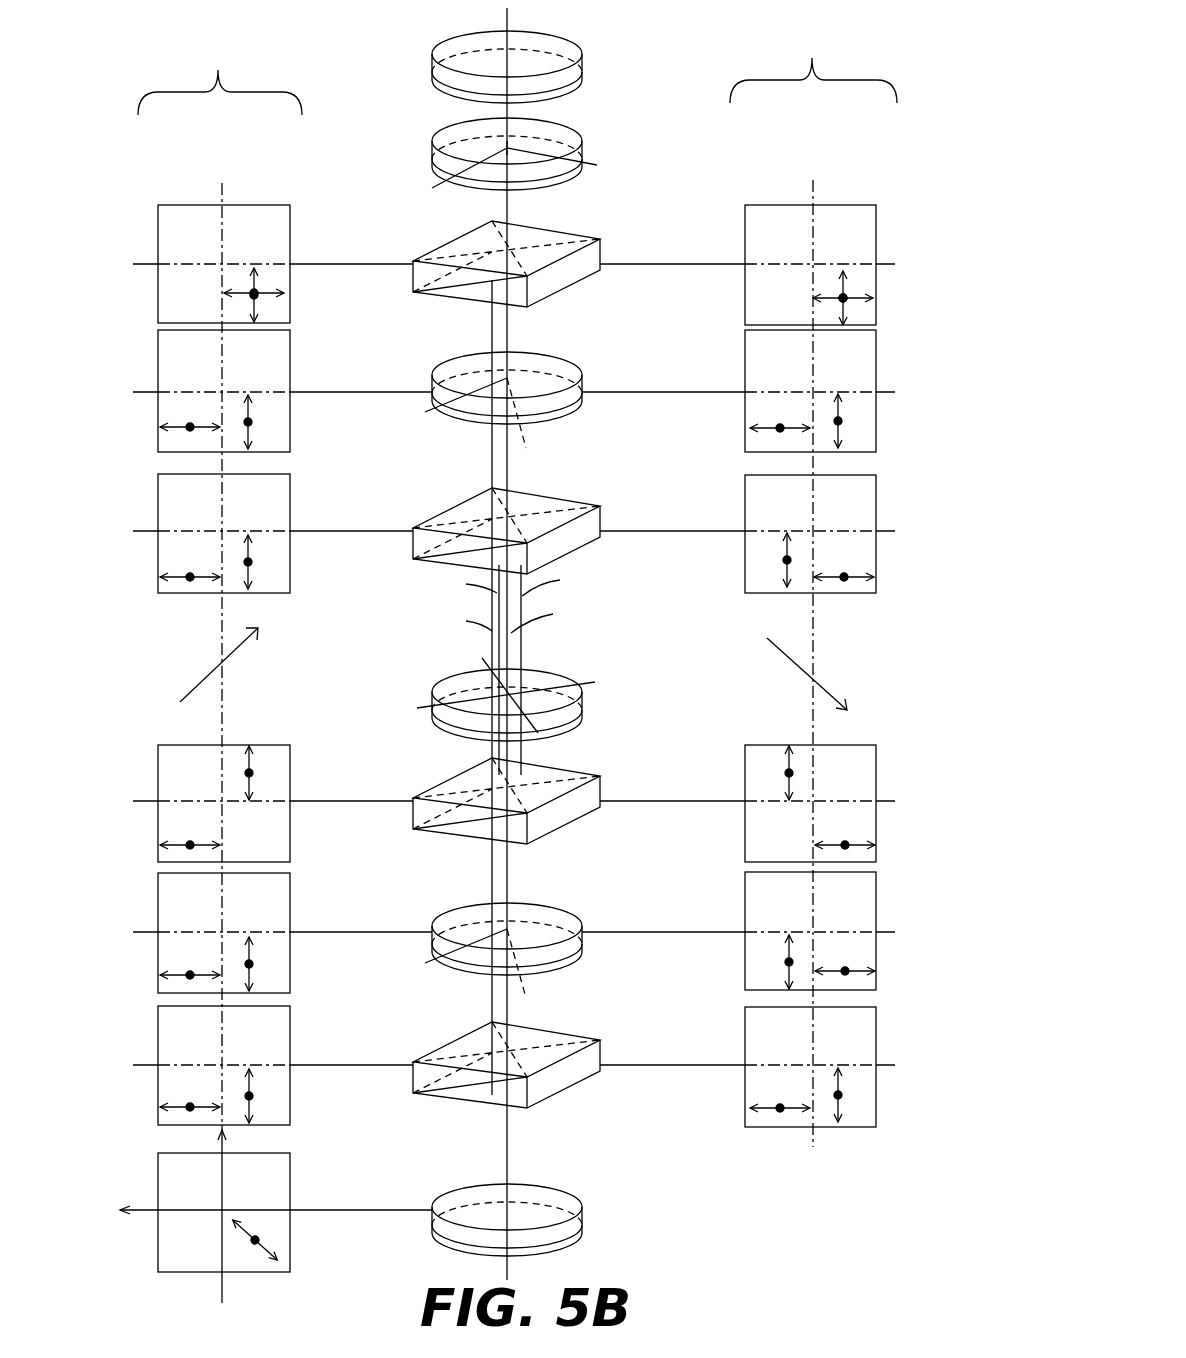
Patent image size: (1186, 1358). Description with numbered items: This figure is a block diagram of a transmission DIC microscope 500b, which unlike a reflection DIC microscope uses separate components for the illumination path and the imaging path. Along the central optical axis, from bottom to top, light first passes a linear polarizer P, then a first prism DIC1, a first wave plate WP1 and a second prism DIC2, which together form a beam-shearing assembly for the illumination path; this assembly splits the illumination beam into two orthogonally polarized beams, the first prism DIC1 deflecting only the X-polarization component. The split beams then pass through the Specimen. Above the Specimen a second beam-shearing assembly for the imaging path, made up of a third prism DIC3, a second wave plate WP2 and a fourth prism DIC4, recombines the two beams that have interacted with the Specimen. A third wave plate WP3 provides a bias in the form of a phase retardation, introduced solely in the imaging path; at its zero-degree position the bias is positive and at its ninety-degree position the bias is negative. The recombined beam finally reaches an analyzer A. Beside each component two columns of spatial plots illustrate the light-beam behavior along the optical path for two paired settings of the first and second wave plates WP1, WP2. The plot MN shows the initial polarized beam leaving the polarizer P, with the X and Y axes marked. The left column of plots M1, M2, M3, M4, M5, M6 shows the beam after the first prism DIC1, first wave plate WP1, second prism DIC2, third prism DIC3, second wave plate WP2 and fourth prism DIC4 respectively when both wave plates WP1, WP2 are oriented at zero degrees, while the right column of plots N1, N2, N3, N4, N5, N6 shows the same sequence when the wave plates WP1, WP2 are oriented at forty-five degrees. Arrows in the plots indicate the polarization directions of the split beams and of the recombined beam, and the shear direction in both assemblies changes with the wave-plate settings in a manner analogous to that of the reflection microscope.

The transmission DIC microscope 500b is at (773, 1250).
The spatial plot M1 is at (290, 1032).
The spatial plot M2 is at (290, 900).
The spatial plot M3 is at (290, 772).
The spatial plot M4 is at (290, 500).
The spatial plot M5 is at (290, 357).
The spatial plot M6 is at (290, 232).
The spatial plot MN is at (290, 1245).
The spatial plot N1 is at (876, 1033).
The spatial plot N2 is at (876, 897).
The spatial plot N3 is at (876, 770).
The spatial plot N4 is at (876, 505).
The spatial plot N5 is at (876, 365).
The spatial plot N6 is at (876, 240).
The linear polarizer P is at (555, 1220).
The analyzer A is at (558, 67).
The first wave plate WP1 is at (550, 950).
The second wave plate WP2 is at (552, 387).
The third wave plate WP3 is at (541, 167).
The first prism DIC1 is at (554, 1071).
The second prism DIC2 is at (561, 811).
The third prism DIC3 is at (559, 521).
The fourth prism DIC4 is at (566, 263).
The specimen Specimen is at (557, 706).